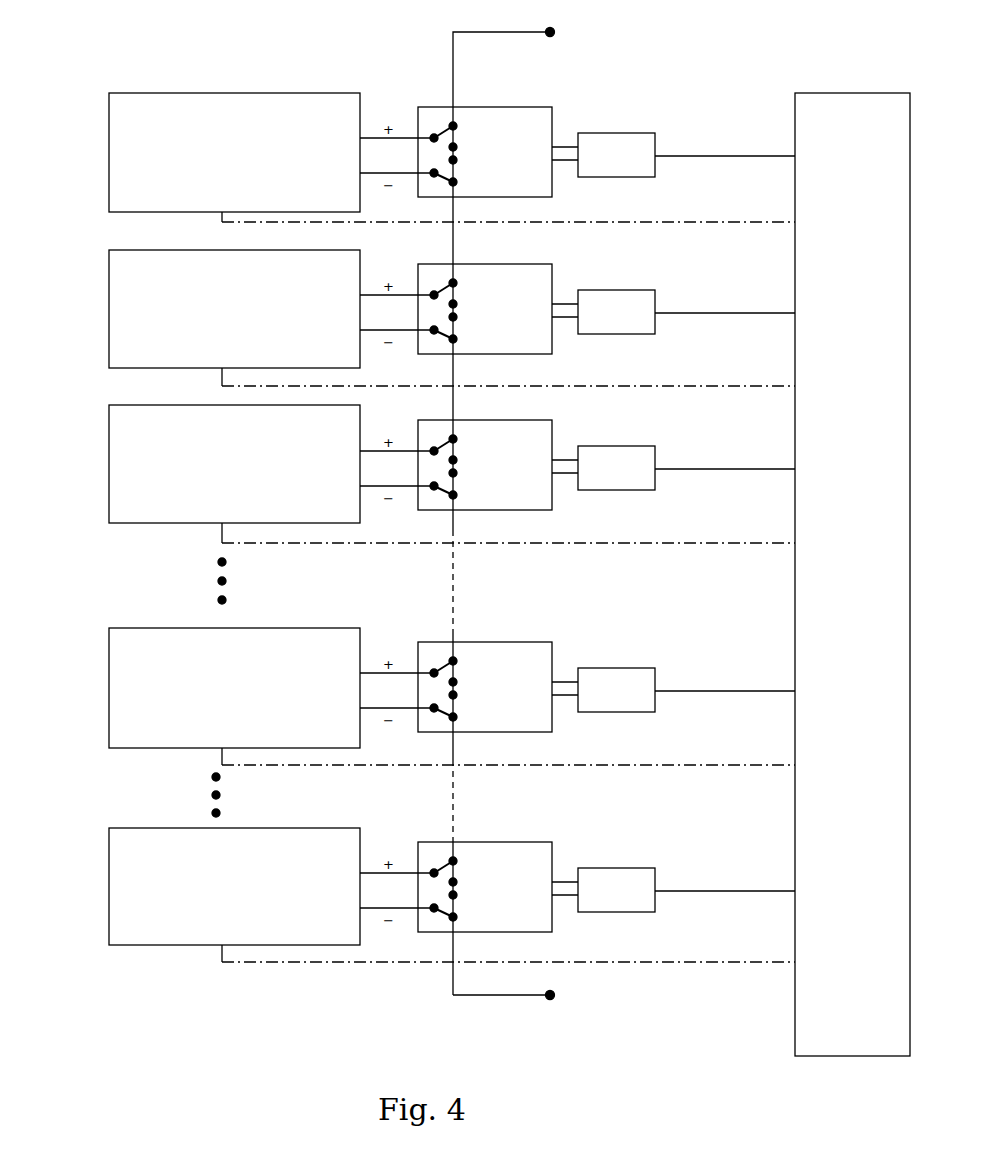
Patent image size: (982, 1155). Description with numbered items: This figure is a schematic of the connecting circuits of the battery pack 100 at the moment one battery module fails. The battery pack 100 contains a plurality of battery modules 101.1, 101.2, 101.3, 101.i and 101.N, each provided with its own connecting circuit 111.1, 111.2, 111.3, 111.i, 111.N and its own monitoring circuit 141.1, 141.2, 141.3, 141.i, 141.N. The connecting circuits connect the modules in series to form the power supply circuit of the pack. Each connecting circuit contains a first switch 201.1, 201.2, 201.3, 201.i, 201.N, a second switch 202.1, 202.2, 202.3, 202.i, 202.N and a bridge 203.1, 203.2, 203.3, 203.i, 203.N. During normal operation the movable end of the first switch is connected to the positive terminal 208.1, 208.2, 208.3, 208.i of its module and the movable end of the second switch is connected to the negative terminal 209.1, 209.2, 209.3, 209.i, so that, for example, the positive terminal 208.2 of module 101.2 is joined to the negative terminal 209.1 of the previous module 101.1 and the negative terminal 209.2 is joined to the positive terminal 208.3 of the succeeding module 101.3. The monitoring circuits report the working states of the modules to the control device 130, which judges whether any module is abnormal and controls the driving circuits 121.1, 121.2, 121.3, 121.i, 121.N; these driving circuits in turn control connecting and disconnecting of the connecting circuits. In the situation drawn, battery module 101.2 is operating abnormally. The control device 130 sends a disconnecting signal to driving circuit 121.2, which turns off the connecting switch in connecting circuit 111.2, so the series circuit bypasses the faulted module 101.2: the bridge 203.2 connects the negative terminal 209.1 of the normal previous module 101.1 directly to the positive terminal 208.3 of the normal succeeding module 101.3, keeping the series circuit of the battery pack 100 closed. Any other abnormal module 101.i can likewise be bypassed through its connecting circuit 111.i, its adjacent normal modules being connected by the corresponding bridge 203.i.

The battery pack 100 is at (290, 71).
The control device 130 is at (874, 95).
The battery module 101.1 is at (125, 139).
The battery module 101.2 is at (125, 296).
The battery module 101.3 is at (125, 455).
The battery module 101.i is at (125, 677).
The battery module 101.N is at (125, 871).
The connecting circuit 111.1 is at (440, 118).
The connecting circuit 111.2 is at (440, 275).
The connecting circuit 111.3 is at (440, 431).
The connecting circuit 111.i is at (440, 653).
The connecting circuit 111.N is at (430, 850).
The driving circuit 121.1 is at (633, 140).
The driving circuit 121.2 is at (633, 297).
The driving circuit 121.3 is at (633, 453).
The driving circuit 121.i is at (633, 675).
The driving circuit 121.N is at (628, 875).
The monitoring circuit 141.1 is at (762, 219).
The monitoring circuit 141.2 is at (762, 383).
The monitoring circuit 141.3 is at (762, 540).
The monitoring circuit 141.i is at (762, 762).
The monitoring circuit 141.N is at (730, 959).
The first switch 201.1 is at (460, 126).
The first switch 201.2 is at (460, 283).
The first switch 201.3 is at (460, 439).
The first switch 201.i is at (460, 661).
The first switch 201.N is at (460, 861).
The second switch 202.1 is at (460, 182).
The second switch 202.2 is at (460, 339).
The second switch 202.3 is at (460, 495).
The second switch 202.i is at (460, 717).
The second switch 202.N is at (460, 917).
The bridge 203.1 is at (460, 149).
The bridge 203.2 is at (460, 306).
The bridge 203.3 is at (460, 462).
The bridge 203.i is at (460, 684).
The bridge 203.N is at (460, 884).
The positive terminal 208.1 is at (433, 136).
The positive terminal 208.2 is at (433, 293).
The positive terminal 208.3 is at (433, 449).
The positive terminal 208.i is at (433, 671).
The negative terminal 209.1 is at (433, 171).
The negative terminal 209.2 is at (433, 328).
The negative terminal 209.3 is at (433, 484).
The negative terminal 209.i is at (433, 706).